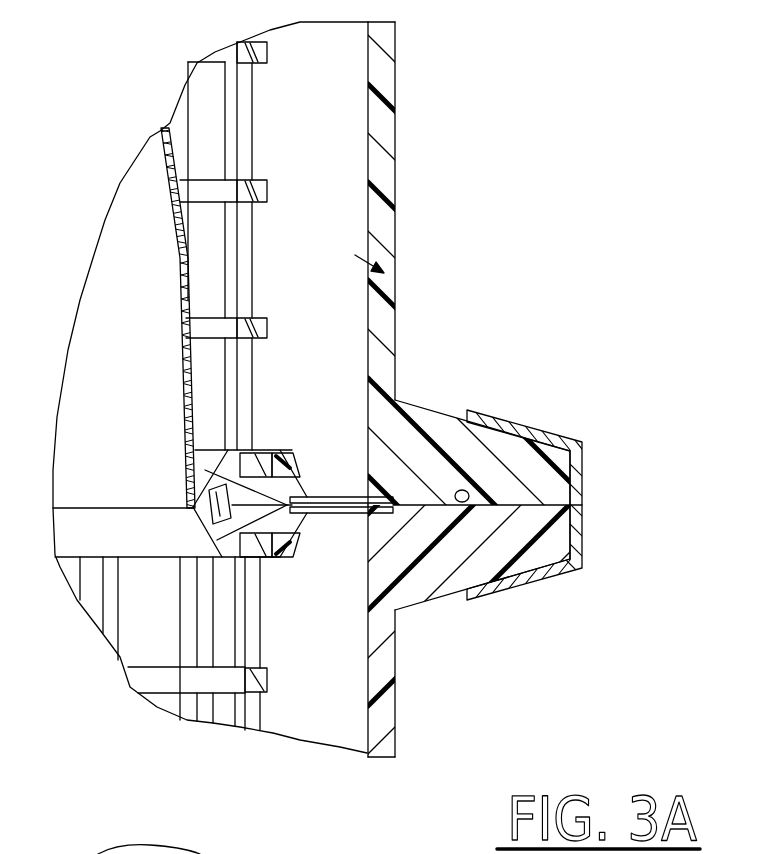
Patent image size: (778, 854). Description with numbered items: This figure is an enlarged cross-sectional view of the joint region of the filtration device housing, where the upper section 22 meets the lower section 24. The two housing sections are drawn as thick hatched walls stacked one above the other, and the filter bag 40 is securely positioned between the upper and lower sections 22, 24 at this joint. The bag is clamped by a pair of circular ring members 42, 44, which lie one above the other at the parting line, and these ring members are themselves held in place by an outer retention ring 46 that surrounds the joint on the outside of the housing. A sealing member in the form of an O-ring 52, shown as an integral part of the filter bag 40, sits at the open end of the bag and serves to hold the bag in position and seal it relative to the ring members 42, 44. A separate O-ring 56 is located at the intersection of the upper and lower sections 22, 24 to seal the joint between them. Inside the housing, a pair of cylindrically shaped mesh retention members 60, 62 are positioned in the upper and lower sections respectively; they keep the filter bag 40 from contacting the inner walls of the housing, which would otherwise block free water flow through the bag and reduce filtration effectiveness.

The upper section 22 is at (392, 237).
The lower section 24 is at (388, 705).
The filter bag 40 is at (177, 283).
The circular ring member 42 is at (329, 496).
The circular ring member 44 is at (333, 514).
The outer retention ring 46 is at (582, 505).
The O-ring 52 is at (198, 528).
The O-ring 56 is at (463, 492).
The mesh retention member 60 is at (262, 260).
The mesh retention member 62 is at (258, 638).